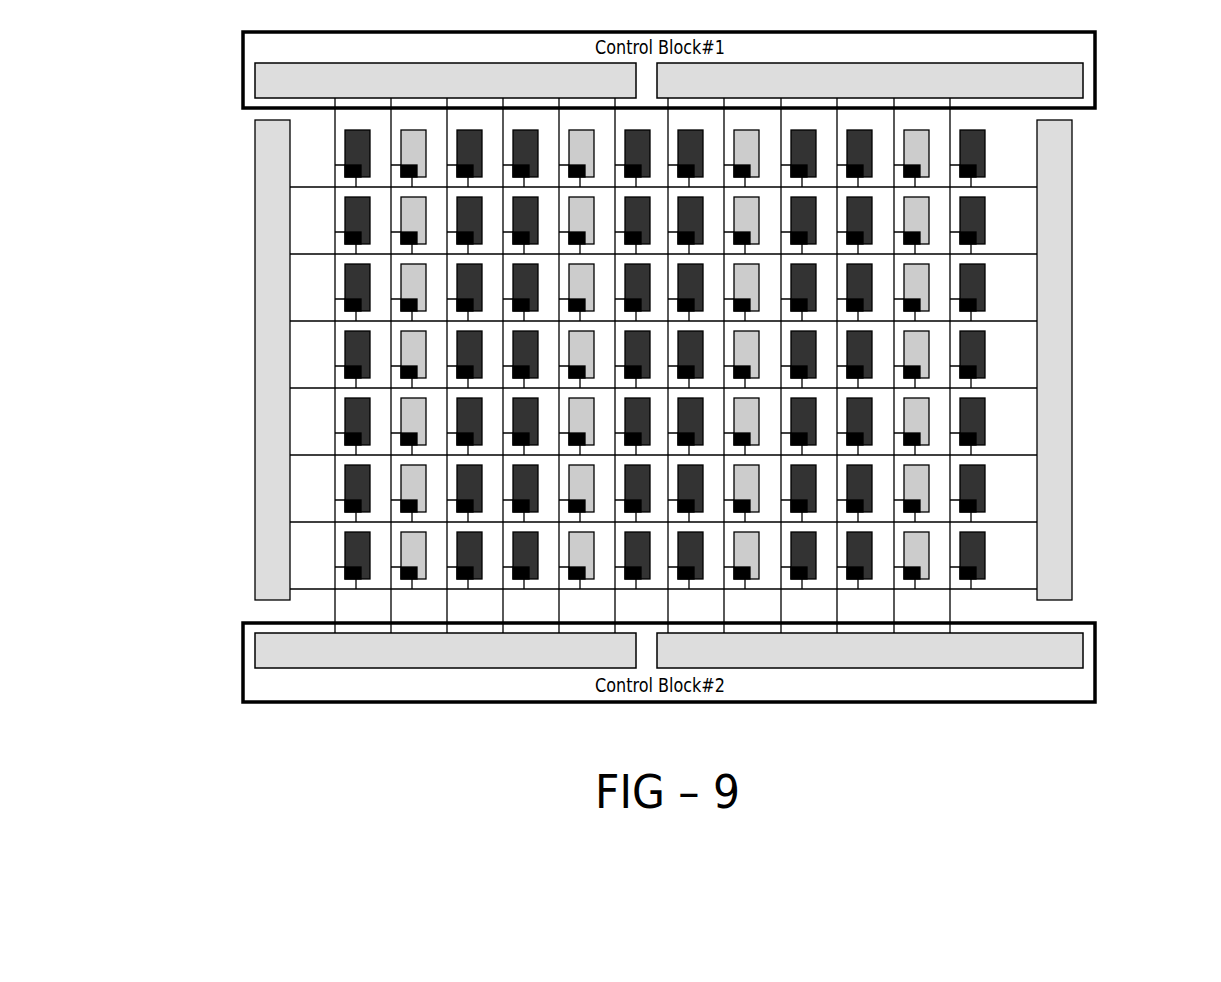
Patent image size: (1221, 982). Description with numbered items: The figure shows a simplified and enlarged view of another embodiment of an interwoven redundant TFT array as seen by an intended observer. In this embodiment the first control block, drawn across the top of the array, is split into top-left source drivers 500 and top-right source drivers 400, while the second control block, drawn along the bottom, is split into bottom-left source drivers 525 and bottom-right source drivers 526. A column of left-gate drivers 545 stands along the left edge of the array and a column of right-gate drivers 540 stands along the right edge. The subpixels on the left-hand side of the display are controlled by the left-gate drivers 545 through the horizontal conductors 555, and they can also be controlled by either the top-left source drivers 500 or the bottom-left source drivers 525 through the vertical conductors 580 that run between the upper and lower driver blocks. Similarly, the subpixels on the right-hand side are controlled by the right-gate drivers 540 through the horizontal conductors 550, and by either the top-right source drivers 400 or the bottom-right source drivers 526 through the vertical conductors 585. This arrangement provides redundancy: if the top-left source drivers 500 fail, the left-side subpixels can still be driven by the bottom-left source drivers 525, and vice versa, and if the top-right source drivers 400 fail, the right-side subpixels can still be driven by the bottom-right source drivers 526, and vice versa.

The top-right source drivers 400 is at (870, 80).
The top-left source drivers 500 is at (445, 80).
The bottom-left source drivers 525 is at (445, 650).
The bottom-right source drivers 526 is at (870, 650).
The right-gate drivers 540 is at (1085, 360).
The left-gate drivers 545 is at (241, 360).
The horizontal conductors 550 is at (1007, 187).
The horizontal conductors 555 is at (310, 253).
The vertical conductors 580 is at (335, 212).
The vertical conductors 585 is at (952, 130).